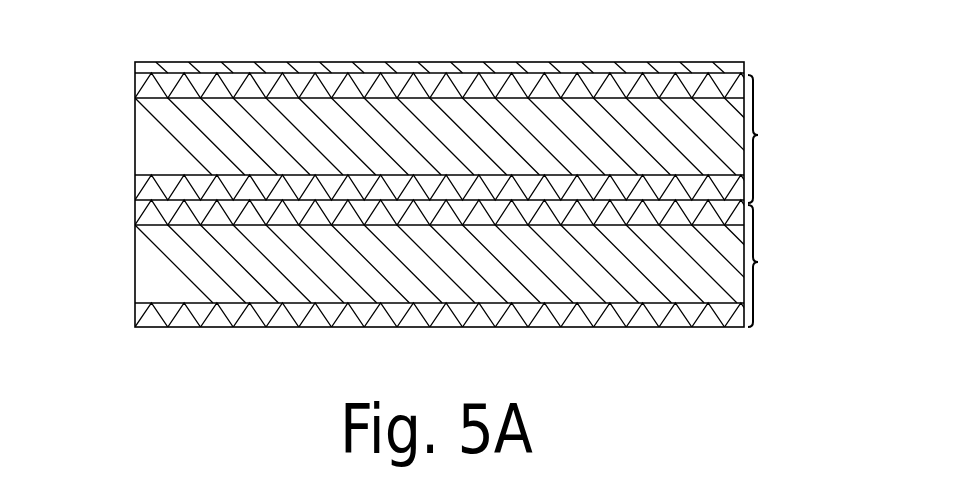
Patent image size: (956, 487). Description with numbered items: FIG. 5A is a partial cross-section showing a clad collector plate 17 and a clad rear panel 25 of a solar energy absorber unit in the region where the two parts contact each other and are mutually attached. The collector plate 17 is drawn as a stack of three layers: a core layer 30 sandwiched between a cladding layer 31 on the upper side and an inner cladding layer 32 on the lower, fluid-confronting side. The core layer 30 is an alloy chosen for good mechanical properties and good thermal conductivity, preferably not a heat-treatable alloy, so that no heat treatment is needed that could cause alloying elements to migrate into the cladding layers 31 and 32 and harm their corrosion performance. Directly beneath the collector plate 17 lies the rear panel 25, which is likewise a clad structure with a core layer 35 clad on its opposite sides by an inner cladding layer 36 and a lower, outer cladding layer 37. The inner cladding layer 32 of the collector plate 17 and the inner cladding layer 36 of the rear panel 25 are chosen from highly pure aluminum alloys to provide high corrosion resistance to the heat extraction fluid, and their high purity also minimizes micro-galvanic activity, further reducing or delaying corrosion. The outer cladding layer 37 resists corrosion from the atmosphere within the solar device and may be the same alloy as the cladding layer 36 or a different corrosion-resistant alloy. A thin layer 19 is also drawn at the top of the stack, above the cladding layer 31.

The top coating layer 19 is at (150, 70).
The cladding layer 31 is at (137, 88).
The core layer 30 is at (153, 133).
The cladding layer 32 is at (140, 192).
The cladding layer 36 is at (137, 215).
The core layer 35 is at (137, 262).
The cladding layer 37 is at (137, 317).
The collector plate 17 is at (779, 139).
The rear panel 25 is at (780, 266).